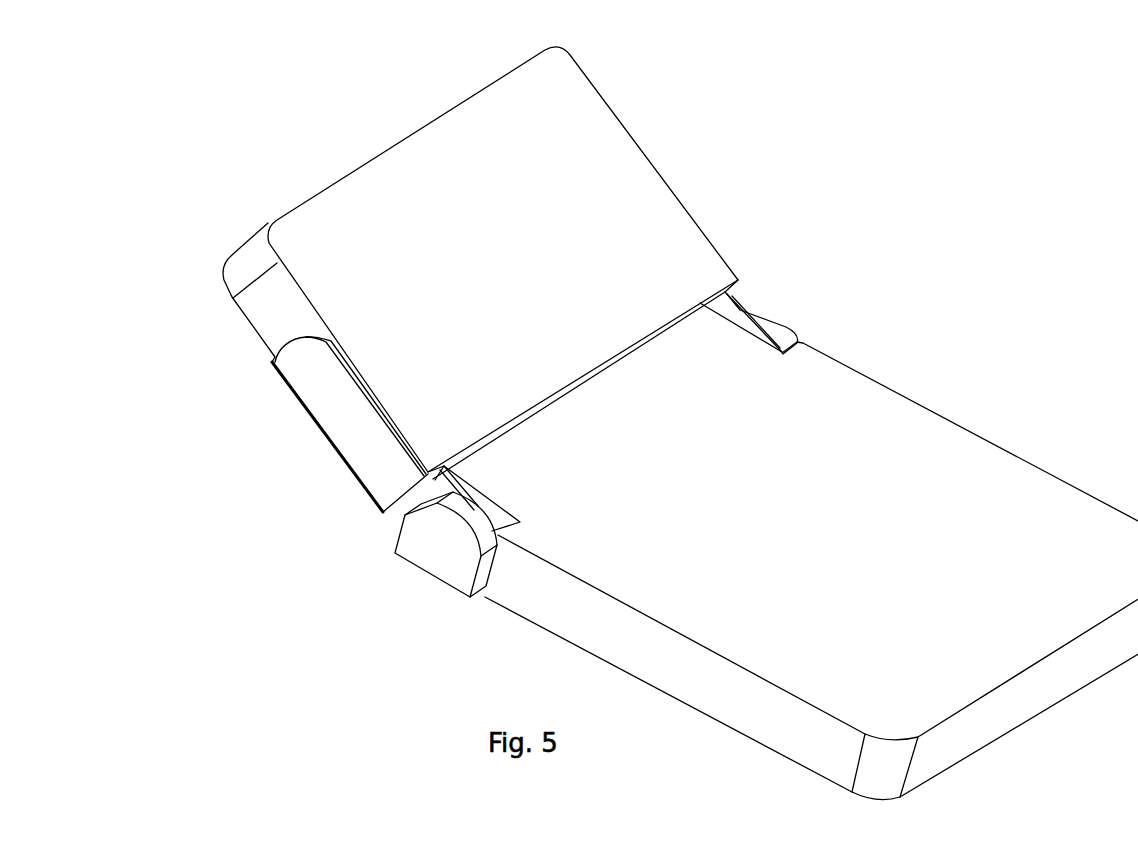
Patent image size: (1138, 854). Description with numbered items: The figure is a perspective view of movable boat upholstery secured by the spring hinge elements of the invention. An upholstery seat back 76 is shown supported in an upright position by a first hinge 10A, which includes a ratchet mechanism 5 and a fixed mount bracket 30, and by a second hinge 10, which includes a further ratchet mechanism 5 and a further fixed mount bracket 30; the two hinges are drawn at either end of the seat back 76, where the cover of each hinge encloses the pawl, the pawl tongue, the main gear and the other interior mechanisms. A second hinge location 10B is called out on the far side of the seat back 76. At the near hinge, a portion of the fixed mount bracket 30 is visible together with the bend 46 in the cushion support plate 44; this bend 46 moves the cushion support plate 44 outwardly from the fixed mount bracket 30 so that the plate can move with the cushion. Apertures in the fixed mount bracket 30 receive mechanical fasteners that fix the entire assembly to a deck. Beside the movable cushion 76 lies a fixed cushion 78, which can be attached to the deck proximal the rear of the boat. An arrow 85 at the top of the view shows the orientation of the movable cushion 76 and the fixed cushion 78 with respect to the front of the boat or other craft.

The arrow 85 is at (428, 83).
The upholstery seat back 76 is at (518, 307).
The fixed cushion 78 is at (838, 544).
The cushion support plate 44 is at (361, 420).
The bend 46 is at (437, 466).
The fixed mount bracket 30 is at (455, 480).
The second hinge 10 is at (423, 565).
The first hinge 10A is at (348, 621).
The second hinge assembly 10B is at (757, 242).
The ratchet mechanism 5 is at (792, 317).